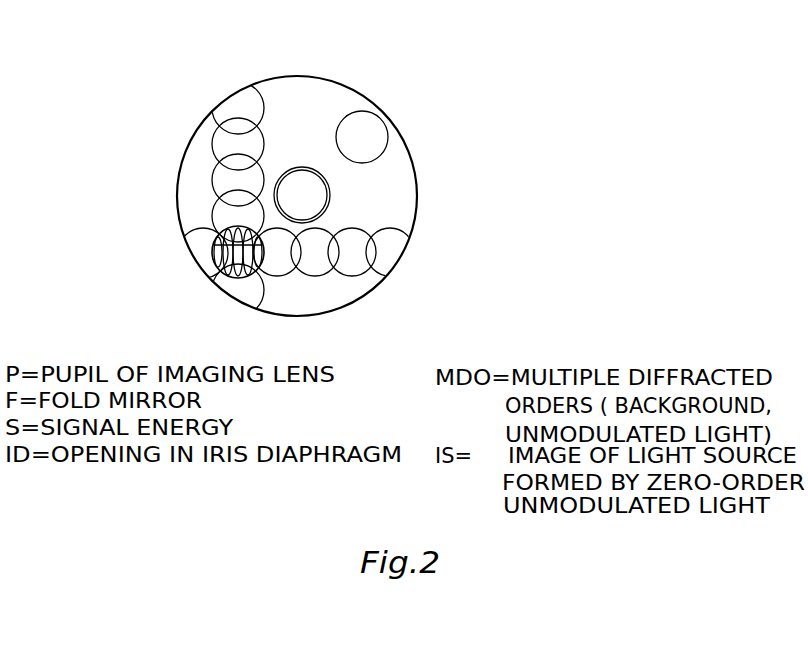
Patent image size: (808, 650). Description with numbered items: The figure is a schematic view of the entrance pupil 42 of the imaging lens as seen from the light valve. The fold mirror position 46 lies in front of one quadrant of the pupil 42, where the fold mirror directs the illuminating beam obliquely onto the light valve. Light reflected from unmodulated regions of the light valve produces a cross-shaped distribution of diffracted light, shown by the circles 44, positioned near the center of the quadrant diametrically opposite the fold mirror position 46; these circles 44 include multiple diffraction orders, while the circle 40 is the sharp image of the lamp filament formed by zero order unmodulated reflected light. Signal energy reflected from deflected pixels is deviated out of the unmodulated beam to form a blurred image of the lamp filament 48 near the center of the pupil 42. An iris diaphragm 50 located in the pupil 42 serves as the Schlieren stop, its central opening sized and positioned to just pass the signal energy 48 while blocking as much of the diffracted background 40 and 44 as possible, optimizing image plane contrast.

The zero order unmodulated reflected light 40 is at (214, 267).
The pupil 42 is at (353, 90).
The circles of diffracted light 44 is at (175, 132).
The fold mirror position 46 is at (385, 120).
The signal energy 48 is at (331, 185).
The iris diaphragm 50 is at (331, 205).